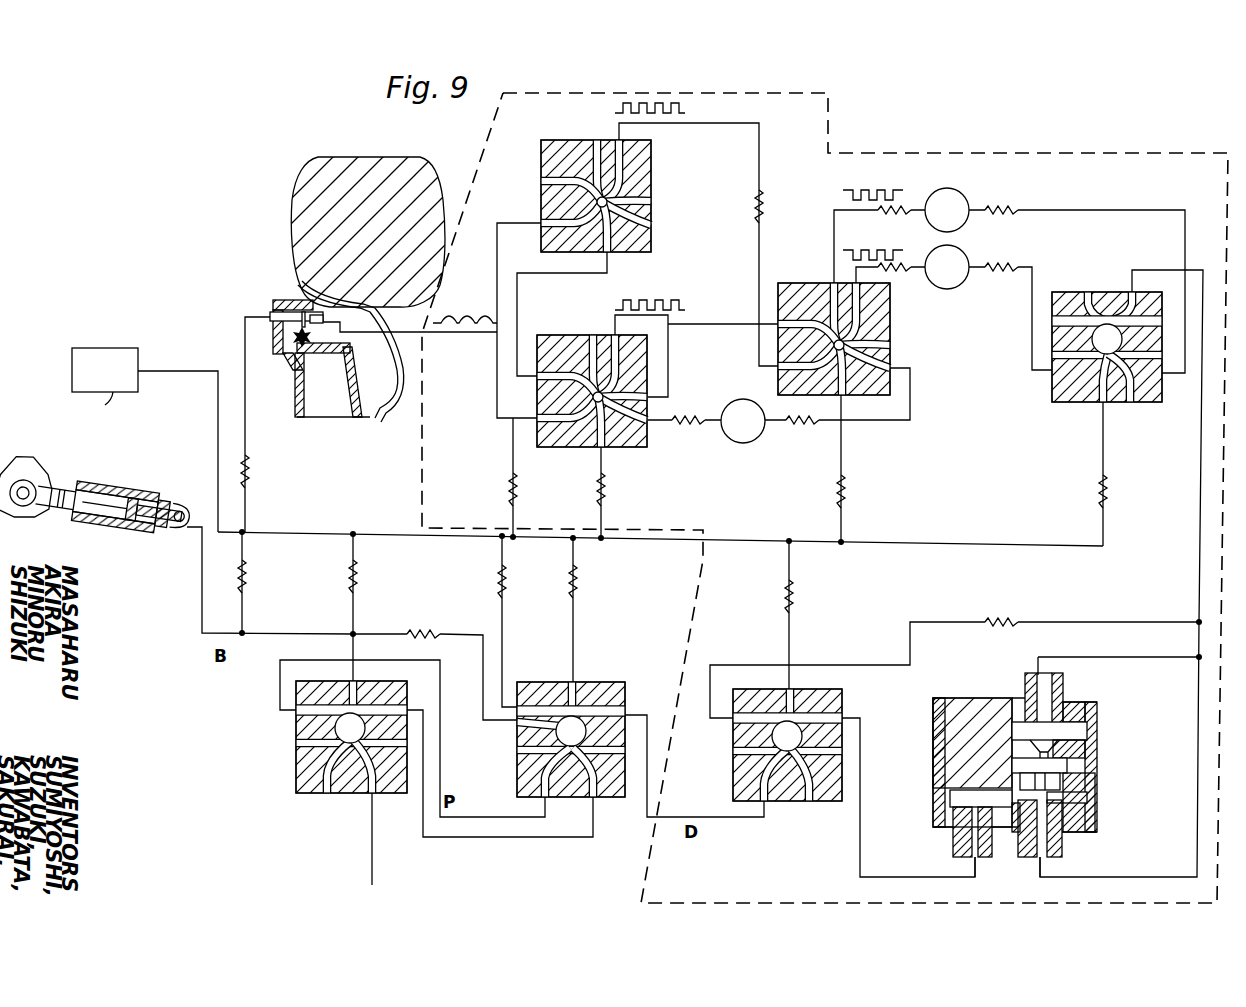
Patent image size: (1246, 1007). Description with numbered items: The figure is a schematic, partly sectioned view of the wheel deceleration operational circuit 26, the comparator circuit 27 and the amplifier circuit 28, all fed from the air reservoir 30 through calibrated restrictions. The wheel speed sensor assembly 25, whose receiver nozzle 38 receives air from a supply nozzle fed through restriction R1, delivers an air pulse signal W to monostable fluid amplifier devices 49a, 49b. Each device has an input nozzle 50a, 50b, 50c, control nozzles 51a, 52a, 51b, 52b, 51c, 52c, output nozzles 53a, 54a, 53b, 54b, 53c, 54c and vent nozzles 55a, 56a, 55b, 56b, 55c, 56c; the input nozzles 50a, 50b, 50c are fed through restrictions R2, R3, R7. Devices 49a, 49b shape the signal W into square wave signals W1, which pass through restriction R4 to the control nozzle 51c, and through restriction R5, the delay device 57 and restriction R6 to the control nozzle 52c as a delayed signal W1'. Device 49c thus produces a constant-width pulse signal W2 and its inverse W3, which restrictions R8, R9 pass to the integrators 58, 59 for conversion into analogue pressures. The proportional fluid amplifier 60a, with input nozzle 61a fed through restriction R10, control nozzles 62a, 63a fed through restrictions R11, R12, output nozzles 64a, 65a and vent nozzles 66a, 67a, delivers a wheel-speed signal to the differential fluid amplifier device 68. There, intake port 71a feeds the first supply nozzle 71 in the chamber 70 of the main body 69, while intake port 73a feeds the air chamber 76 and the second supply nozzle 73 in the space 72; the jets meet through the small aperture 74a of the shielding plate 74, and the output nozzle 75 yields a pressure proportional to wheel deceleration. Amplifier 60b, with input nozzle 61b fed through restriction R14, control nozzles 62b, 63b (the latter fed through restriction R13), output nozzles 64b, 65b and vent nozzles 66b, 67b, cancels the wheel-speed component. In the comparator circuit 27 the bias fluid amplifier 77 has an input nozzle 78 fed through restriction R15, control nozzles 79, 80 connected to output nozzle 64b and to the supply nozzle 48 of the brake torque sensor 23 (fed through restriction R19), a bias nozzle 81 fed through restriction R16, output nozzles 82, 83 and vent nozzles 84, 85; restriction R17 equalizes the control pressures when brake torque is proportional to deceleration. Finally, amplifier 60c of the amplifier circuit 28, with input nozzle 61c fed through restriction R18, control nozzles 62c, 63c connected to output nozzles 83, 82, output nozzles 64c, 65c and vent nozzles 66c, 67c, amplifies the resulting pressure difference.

The brake torque sensor 23 is at (111, 530).
The wheel speed sensor assembly 25 is at (314, 333).
The wheel deceleration operational circuit 26 is at (990, 474).
The comparator circuit 27 is at (565, 738).
The amplifier circuit 28 is at (327, 749).
The air reservoir 30 is at (113, 360).
The receiver nozzle 38 is at (330, 325).
The supply nozzle 48 is at (172, 552).
The monostable fluid amplifier device 49a is at (599, 194).
The monostable fluid amplifier device 49b is at (583, 393).
The monostable fluid amplifier device 49c is at (851, 323).
The input nozzle 50a is at (633, 244).
The input nozzle 50b is at (632, 442).
The input nozzle 50c is at (874, 385).
The control nozzle 51a is at (552, 232).
The control nozzle 51b is at (565, 436).
The control nozzle 51c is at (778, 369).
The control nozzle 52a is at (657, 223).
The control nozzle 52b is at (651, 431).
The control nozzle 52c is at (913, 368).
The output nozzle 53a is at (655, 169).
The output nozzle 53b is at (630, 357).
The output nozzle 53c is at (890, 314).
The output nozzle 54a is at (594, 152).
The output nozzle 54b is at (592, 348).
The output nozzle 54c is at (817, 299).
The vent nozzle 55a is at (543, 186).
The vent nozzle 55b is at (524, 392).
The vent nozzle 55c is at (777, 337).
The vent nozzle 56a is at (657, 193).
The vent nozzle 56b is at (657, 383).
The vent nozzle 56c is at (896, 354).
The delay device 57 is at (752, 432).
The integrator 58 is at (955, 280).
The integrator 59 is at (953, 202).
The proportional fluid amplifier 60a is at (1107, 352).
The proportional fluid amplifier 60b is at (802, 745).
The proportional fluid amplifier 60c is at (339, 749).
The input nozzle 61a is at (1126, 411).
The input nozzle 61b is at (824, 678).
The input nozzle 61c is at (386, 681).
The control nozzle 62a is at (1047, 382).
The control nozzle 62b is at (855, 702).
The control nozzle 62c is at (398, 693).
The control nozzle 63a is at (1145, 400).
The control nozzle 63b is at (732, 733).
The control nozzle 63c is at (295, 725).
The output nozzle 64a is at (1147, 293).
The output nozzle 64b is at (775, 800).
The output nozzle 64c is at (312, 793).
The output nozzle 65a is at (1117, 283).
The output nozzle 65b is at (823, 800).
The output nozzle 65c is at (354, 793).
The vent nozzle 66a is at (1168, 278).
The vent nozzle 66b is at (730, 765).
The vent nozzle 66c is at (293, 757).
The vent nozzle 67a is at (1047, 339).
The vent nozzle 67b is at (861, 766).
The vent nozzle 67c is at (389, 794).
The differential fluid amplifier device 68 is at (1017, 771).
The main body 69 is at (945, 735).
The chamber 70 is at (950, 800).
The first supply nozzle 71 is at (1095, 818).
The intake port 71a is at (1055, 850).
The space 72 is at (1067, 764).
The second supply nozzle 73 is at (1087, 729).
The intake port 73a is at (1040, 685).
The shielding plate 74 is at (1060, 797).
The small aperture 74a is at (1060, 782).
The output nozzle 75 is at (985, 866).
The air chamber 76 is at (1062, 718).
The bias fluid amplifier 77 is at (565, 753).
The input nozzle 78 is at (598, 675).
The control nozzle 79 is at (651, 671).
The control nozzle 80 is at (516, 739).
The bias nozzle 81 is at (511, 688).
The output nozzle 82 is at (555, 807).
The output nozzle 83 is at (608, 790).
The vent nozzle 84 is at (523, 767).
The vent nozzle 85 is at (625, 697).
The restriction R1 is at (249, 460).
The restriction R2 is at (518, 490).
The restriction R3 is at (605, 490).
The restriction R4 is at (764, 203).
The restriction R5 is at (690, 428).
The restriction R6 is at (804, 428).
The restriction R7 is at (846, 486).
The restriction R8 is at (915, 272).
The restriction R9 is at (893, 213).
The restriction R10 is at (1110, 490).
The restriction R11 is at (1008, 266).
The restriction R12 is at (1010, 207).
The restriction R13 is at (998, 617).
The restriction R14 is at (795, 590).
The restriction R15 is at (578, 578).
The restriction R16 is at (506, 578).
The flow restriction R17 is at (430, 628).
The flow restriction R18 is at (358, 570).
The restriction R19 is at (248, 570).
The air pulse signal W is at (464, 318).
The square wave air signal W1 is at (673, 203).
The delayed air signal W1' is at (934, 419).
The air signal W2 is at (900, 252).
The air signal W3 is at (890, 192).